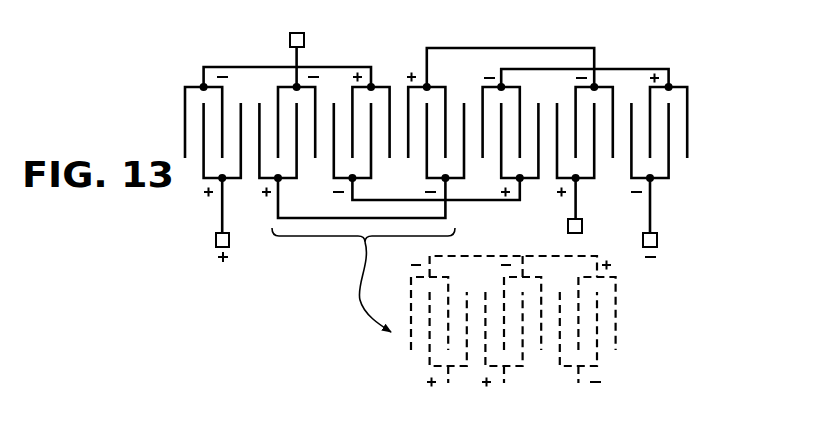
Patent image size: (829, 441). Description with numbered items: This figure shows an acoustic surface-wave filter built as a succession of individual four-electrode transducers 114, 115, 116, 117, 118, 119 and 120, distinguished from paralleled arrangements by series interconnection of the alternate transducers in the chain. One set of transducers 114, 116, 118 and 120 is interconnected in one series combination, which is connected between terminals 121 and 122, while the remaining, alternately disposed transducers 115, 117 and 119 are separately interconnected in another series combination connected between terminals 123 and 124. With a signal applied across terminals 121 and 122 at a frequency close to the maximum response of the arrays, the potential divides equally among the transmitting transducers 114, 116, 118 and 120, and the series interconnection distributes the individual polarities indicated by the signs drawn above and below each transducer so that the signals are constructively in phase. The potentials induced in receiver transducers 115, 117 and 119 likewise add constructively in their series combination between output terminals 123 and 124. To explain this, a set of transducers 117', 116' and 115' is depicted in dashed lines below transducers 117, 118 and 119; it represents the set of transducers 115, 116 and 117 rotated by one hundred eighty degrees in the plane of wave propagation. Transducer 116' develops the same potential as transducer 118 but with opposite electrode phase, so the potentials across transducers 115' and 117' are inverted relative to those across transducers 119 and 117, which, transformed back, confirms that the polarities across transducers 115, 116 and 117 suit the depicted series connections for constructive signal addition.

The four-electrode transducer 114 is at (199, 179).
The four-electrode transducer 115 is at (276, 151).
The four-electrode transducer 116 is at (344, 144).
The four-electrode transducer 117 is at (423, 137).
The four-electrode transducer 118 is at (530, 184).
The four-electrode transducer 119 is at (599, 172).
The four-electrode transducer 120 is at (671, 188).
The terminal 121 is at (216, 240).
The terminal 122 is at (657, 240).
The terminal 123 is at (296, 32).
The terminal 124 is at (568, 230).
The rotated transducer 115' is at (630, 322).
The rotated transducer 116' is at (529, 344).
The rotated transducer 117' is at (408, 326).